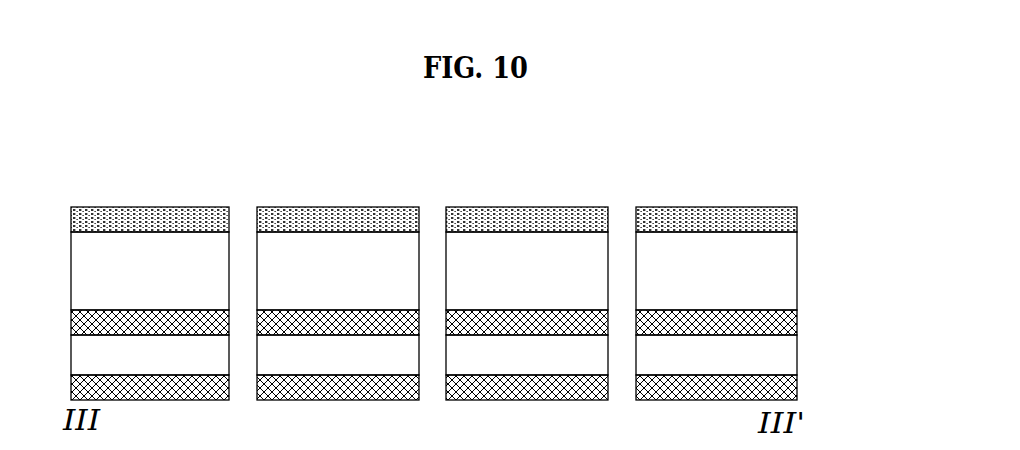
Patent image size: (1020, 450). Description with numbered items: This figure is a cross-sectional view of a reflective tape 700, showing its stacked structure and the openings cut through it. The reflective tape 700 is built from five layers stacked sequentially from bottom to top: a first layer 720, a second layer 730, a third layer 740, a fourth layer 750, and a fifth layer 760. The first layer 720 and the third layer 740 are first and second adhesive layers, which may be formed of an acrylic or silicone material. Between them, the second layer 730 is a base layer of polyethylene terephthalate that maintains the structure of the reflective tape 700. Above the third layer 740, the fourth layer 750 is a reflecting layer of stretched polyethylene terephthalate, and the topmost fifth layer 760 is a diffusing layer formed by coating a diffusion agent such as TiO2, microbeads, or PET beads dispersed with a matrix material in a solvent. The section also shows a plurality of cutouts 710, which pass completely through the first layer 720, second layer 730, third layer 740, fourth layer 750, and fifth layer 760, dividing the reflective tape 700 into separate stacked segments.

The reflective tape 700 is at (790, 162).
The cutouts 710 is at (244, 217).
The first layer 720 is at (779, 387).
The second layer 730 is at (779, 352).
The third layer 740 is at (779, 325).
The fourth layer 750 is at (778, 269).
The fifth layer 760 is at (779, 219).